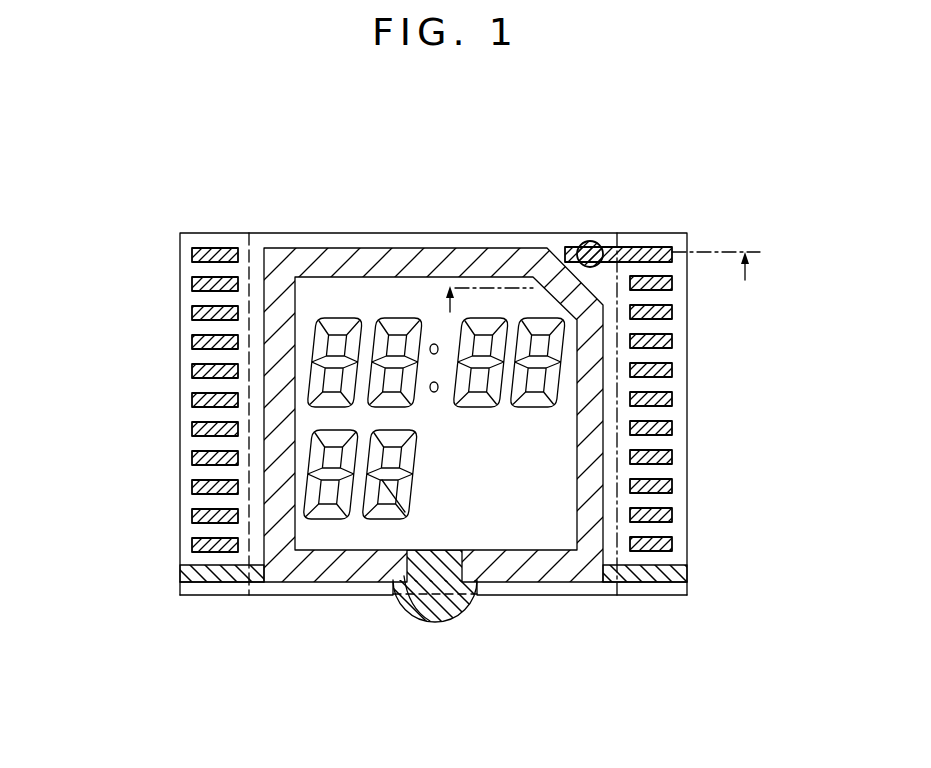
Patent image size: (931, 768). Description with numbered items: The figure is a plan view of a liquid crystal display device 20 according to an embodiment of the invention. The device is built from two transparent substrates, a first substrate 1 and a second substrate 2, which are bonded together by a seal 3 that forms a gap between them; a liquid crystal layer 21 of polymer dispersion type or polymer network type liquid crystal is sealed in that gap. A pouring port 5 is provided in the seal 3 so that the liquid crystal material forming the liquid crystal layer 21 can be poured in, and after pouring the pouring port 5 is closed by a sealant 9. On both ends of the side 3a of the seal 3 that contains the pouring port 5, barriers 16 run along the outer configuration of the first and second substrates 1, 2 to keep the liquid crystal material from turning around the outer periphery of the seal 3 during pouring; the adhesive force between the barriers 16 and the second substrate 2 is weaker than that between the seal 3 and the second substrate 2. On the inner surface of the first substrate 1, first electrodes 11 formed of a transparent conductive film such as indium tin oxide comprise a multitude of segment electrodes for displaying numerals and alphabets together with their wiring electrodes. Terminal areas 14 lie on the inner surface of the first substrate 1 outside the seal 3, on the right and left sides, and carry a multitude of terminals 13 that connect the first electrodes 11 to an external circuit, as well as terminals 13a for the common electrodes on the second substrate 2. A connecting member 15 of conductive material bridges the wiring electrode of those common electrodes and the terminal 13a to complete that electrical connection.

The first substrate 1 is at (212, 596).
The second substrate 2 is at (320, 596).
The seal 3 is at (588, 475).
The side 3a is at (556, 582).
The pouring port 5 is at (430, 606).
The sealant 9 is at (448, 615).
The first electrode 11 is at (393, 318).
The terminals 13 is at (213, 249).
The terminals 13a is at (647, 247).
The terminal areas 14 is at (183, 388).
The connecting member 15 is at (592, 241).
The barriers 16 is at (180, 575).
The liquid crystal display device 20 is at (470, 198).
The liquid crystal layer 21 is at (497, 540).